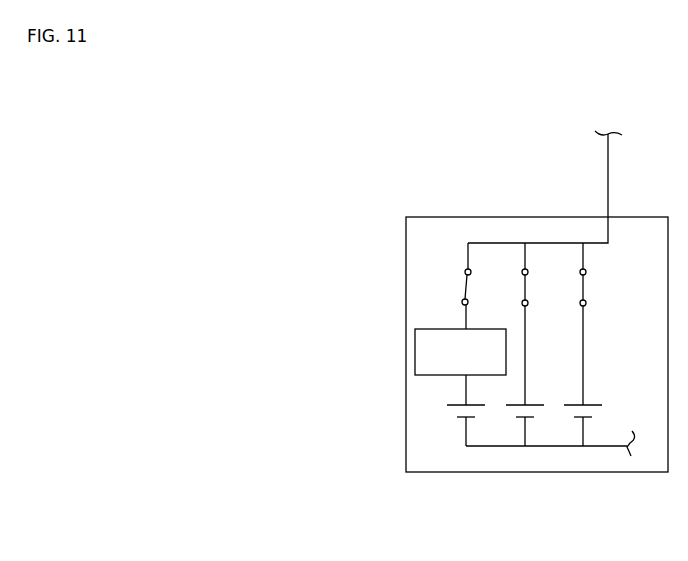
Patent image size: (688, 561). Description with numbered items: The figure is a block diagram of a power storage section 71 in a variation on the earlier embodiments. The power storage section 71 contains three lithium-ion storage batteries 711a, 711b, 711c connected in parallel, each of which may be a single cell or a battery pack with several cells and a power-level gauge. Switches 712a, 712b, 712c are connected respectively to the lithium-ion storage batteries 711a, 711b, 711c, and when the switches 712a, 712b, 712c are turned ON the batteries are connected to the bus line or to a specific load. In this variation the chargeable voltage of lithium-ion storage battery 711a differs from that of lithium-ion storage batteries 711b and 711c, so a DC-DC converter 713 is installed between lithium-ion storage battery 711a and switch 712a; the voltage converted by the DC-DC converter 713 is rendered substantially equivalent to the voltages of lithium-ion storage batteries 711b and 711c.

The power storage section 71 is at (622, 472).
The lithium-ion storage battery 711a is at (460, 417).
The lithium-ion storage battery 711b is at (518, 417).
The lithium-ion storage battery 711c is at (573, 417).
The switch 712a is at (460, 292).
The switch 712b is at (519, 295).
The switch 712c is at (578, 295).
The DC-DC converter 713 is at (415, 352).